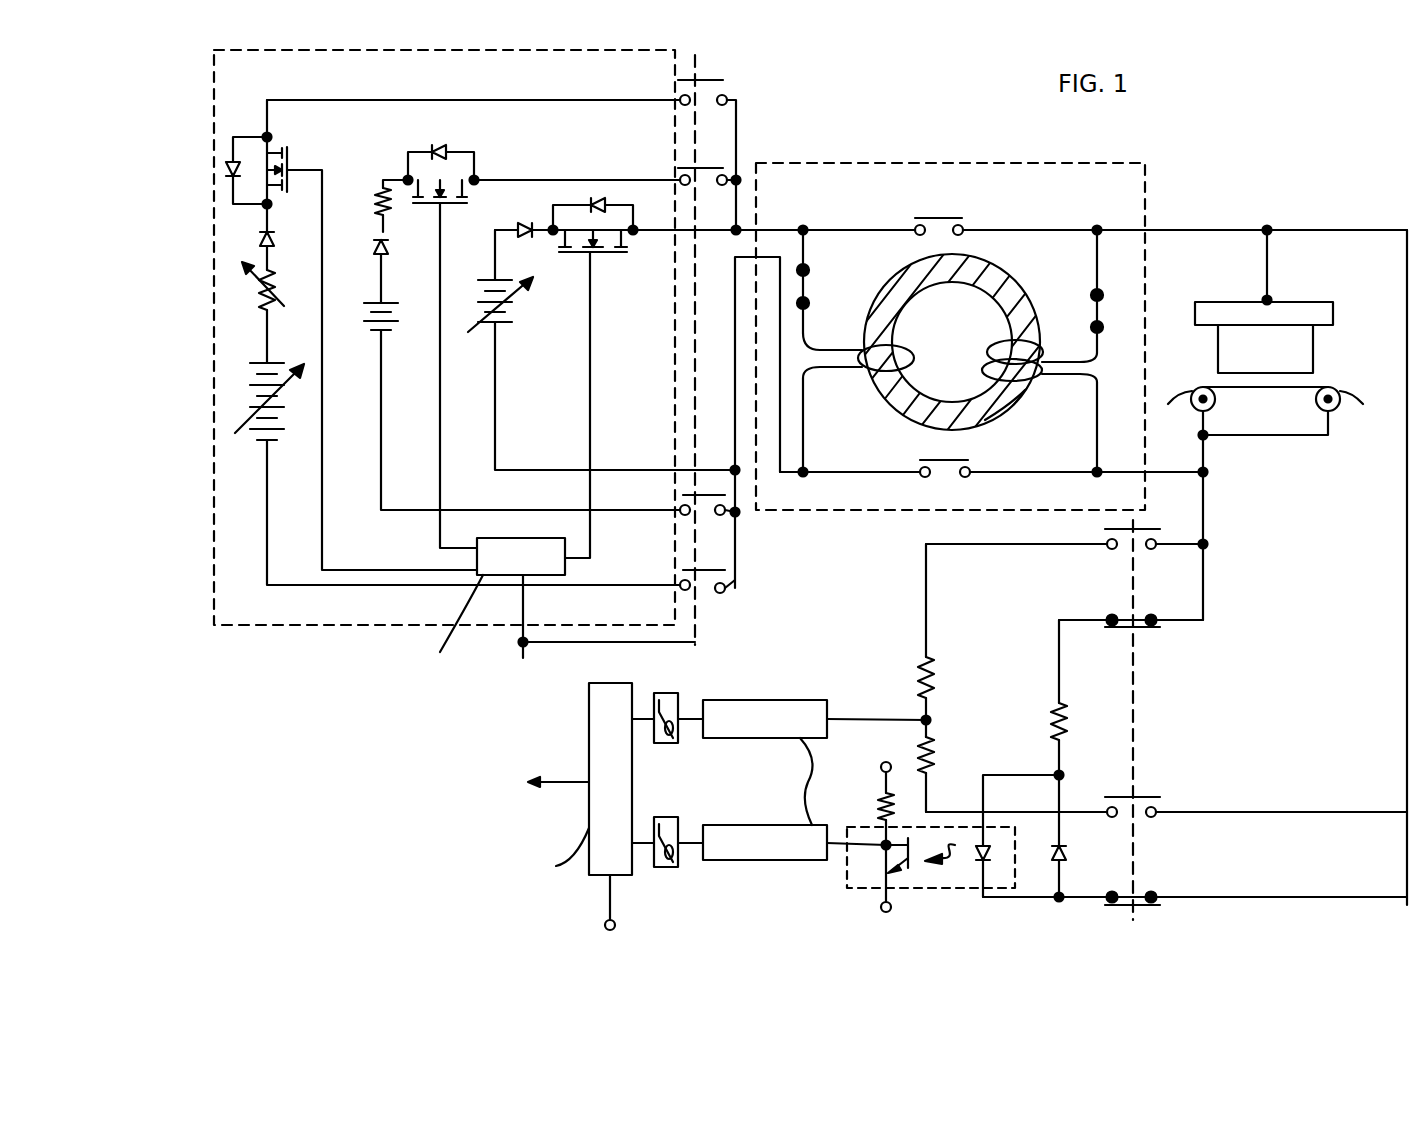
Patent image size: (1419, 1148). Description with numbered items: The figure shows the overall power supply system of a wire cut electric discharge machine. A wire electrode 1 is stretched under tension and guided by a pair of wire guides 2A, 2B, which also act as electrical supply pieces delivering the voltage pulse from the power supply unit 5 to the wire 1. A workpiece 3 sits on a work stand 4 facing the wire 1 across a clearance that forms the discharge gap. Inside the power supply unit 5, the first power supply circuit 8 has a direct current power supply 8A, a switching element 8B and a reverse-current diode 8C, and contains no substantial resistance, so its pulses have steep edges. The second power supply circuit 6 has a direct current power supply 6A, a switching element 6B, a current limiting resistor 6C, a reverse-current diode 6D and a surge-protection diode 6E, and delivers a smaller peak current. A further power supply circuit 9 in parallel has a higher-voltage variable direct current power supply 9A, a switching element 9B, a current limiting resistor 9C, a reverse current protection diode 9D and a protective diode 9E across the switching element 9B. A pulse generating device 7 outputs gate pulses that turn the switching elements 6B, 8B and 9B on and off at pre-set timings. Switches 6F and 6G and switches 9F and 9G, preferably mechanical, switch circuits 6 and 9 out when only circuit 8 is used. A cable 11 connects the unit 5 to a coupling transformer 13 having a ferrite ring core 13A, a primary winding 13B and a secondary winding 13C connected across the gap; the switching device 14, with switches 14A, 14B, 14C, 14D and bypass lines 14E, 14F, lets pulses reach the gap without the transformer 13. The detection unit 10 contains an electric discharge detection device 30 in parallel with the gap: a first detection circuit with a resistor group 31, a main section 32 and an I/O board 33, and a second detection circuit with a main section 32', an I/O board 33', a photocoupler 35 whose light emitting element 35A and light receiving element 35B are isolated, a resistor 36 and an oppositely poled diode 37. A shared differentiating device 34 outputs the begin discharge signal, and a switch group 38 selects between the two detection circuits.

The wire electrode 1 is at (1272, 390).
The wire guide 2A is at (1192, 405).
The wire guide 2B is at (1338, 407).
The workpiece 3 is at (1313, 335).
The work stand 4 is at (1310, 302).
The power supply unit 5 is at (214, 82).
The second power supply circuit 6 is at (381, 478).
The direct current power supply 6A is at (372, 328).
The switching element 6B is at (458, 203).
The current limiting resistor 6C is at (378, 208).
The diode 6D is at (372, 244).
The diode 6E is at (440, 150).
The switch 6F is at (710, 165).
The switch 6G is at (700, 512).
The pulse generating device 7 is at (515, 575).
The first power supply circuit 8 is at (495, 432).
The direct current power supply 8A is at (478, 322).
The switching element 8B is at (625, 252).
The diode 8C is at (528, 236).
The power supply circuit 9 is at (267, 560).
The variable direct current power supply 9A is at (245, 405).
The switching element 9B is at (285, 152).
The current limiting resistor 9C is at (256, 298).
The reverse current protection diode 9D is at (262, 238).
The diode 9E is at (233, 158).
The switch 9F is at (716, 76).
The switch 9G is at (700, 588).
The detection unit 10 is at (918, 163).
The cable 11 is at (765, 250).
The coupling transformer 13 is at (888, 428).
The ferrite ring core 13A is at (1015, 418).
The primary winding 13B is at (858, 362).
The secondary winding 13C is at (1055, 362).
The switching device 14 is at (1042, 230).
The switch 14A is at (940, 215).
The switch 14B is at (943, 476).
The switch 14C is at (810, 292).
The switch 14D is at (1090, 312).
The bypass line 14E is at (915, 226).
The bypass line 14F is at (1065, 472).
The electric discharge detection device 30 is at (836, 636).
The resistor group 31 is at (918, 688).
The main section 32 is at (785, 735).
The main section 32' is at (794, 874).
The I/O board 33 is at (667, 699).
The I/O board 33' is at (667, 870).
The differentiating device 34 is at (589, 716).
The photocoupler 35 is at (900, 890).
The light emitting element 35A is at (998, 870).
The light receiving element 35B is at (884, 872).
The resistor 36 is at (1045, 718).
The diode 37 is at (1068, 856).
The switch group 38 is at (1133, 718).